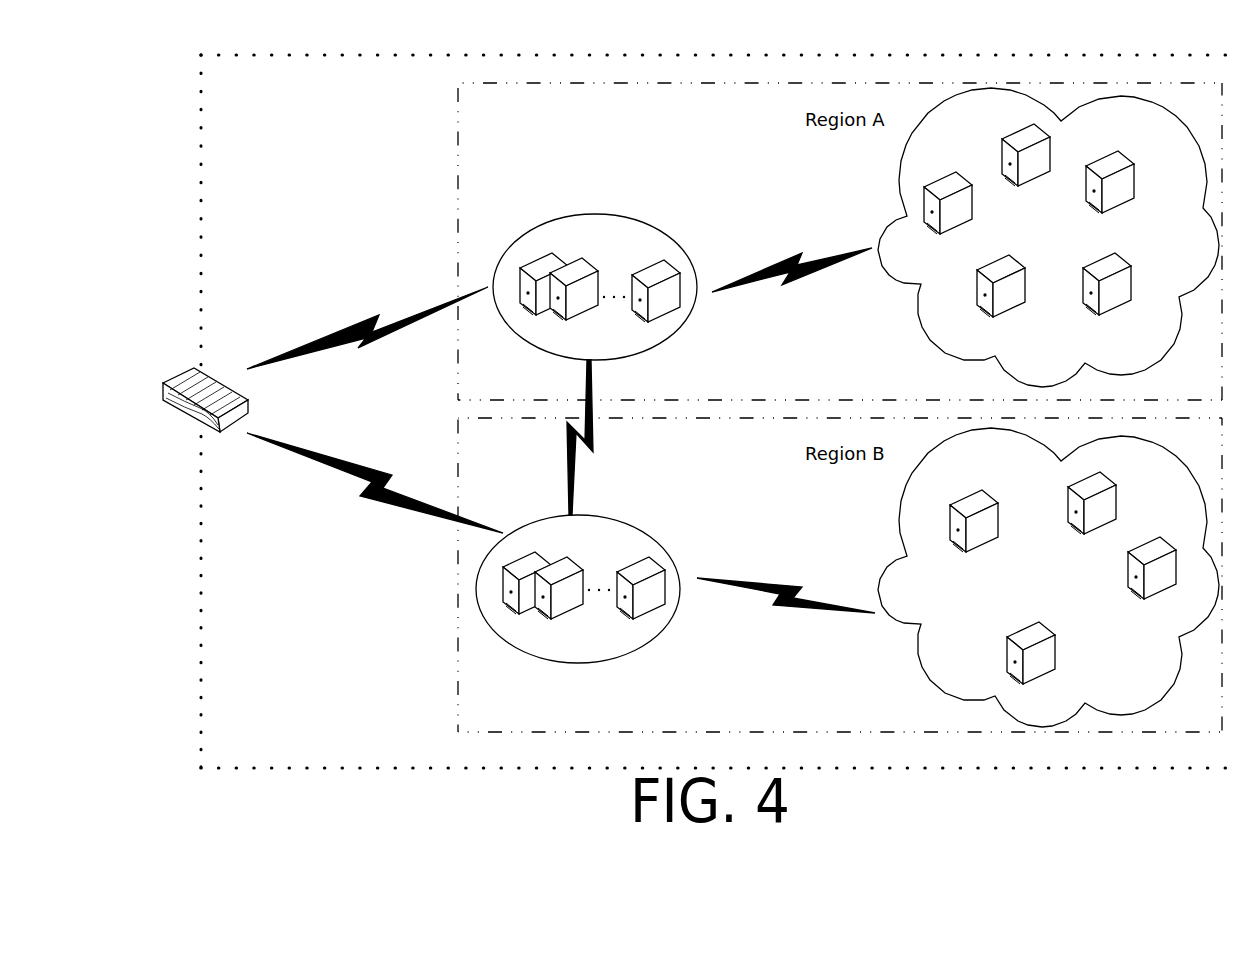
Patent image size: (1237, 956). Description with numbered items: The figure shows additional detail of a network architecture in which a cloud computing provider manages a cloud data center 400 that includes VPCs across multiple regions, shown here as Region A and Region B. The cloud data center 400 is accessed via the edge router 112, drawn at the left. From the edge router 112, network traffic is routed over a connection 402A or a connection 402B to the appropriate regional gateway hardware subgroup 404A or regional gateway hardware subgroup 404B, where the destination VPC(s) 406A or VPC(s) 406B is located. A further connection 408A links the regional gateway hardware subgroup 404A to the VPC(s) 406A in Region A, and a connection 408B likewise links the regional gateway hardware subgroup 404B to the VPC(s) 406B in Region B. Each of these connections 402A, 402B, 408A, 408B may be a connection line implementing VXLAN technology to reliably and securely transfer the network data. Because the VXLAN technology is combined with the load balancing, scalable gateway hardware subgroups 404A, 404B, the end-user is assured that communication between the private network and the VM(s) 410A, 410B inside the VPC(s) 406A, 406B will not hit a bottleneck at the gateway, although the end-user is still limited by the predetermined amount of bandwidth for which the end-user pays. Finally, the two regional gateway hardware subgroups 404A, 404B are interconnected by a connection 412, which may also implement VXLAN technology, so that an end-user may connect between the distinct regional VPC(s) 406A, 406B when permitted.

The cloud data center 400 is at (217, 211).
The edge router 112 is at (185, 387).
The connection 402A is at (377, 316).
The connection 402B is at (362, 491).
The regional gateway hardware subgroup 404A is at (613, 228).
The regional gateway hardware subgroup 404B is at (620, 642).
The VPC(s) 406A is at (1071, 261).
The VPC(s) 406B is at (1071, 600).
The connection 408A is at (787, 256).
The connection 408B is at (783, 605).
The VM(s) 410A is at (912, 195).
The VM(s) 410B is at (947, 532).
The connection 412 is at (567, 458).